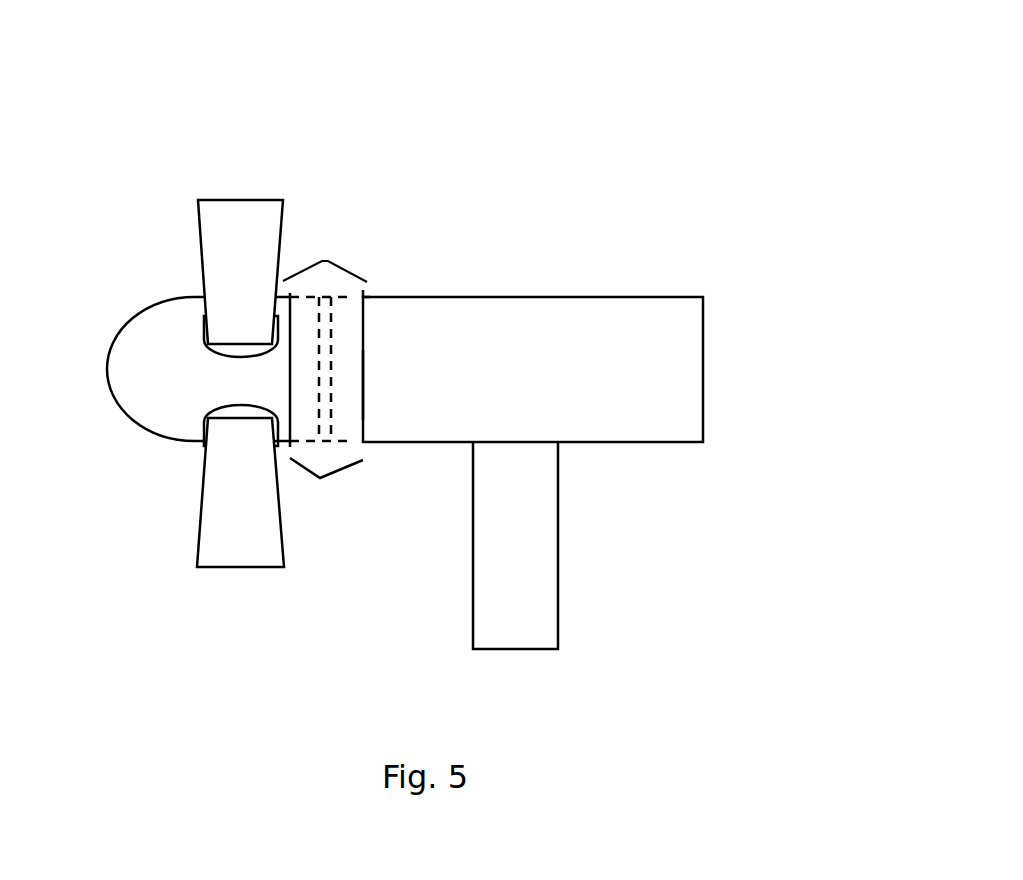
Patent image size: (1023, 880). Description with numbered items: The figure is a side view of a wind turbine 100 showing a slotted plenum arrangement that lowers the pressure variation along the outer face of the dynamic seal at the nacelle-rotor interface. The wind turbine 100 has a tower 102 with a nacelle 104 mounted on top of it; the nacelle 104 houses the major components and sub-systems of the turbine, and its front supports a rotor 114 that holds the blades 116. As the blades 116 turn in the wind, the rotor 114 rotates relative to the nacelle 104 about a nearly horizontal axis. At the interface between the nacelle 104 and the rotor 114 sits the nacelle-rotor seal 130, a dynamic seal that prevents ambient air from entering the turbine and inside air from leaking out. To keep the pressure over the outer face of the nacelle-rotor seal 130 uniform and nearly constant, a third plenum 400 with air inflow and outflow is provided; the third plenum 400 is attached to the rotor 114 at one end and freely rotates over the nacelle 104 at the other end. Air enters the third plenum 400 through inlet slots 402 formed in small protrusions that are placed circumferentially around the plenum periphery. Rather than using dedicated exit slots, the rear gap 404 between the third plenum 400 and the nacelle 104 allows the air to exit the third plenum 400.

The wind turbine 100 is at (730, 210).
The tower 102 is at (472, 552).
The nacelle 104 is at (666, 443).
The rotor 114 is at (133, 317).
The blades 116 is at (217, 197).
The nacelle-rotor seal 130 is at (327, 345).
The third plenum 400 is at (365, 382).
The inlet slots 402 is at (283, 281).
The rear gap 404 is at (367, 282).